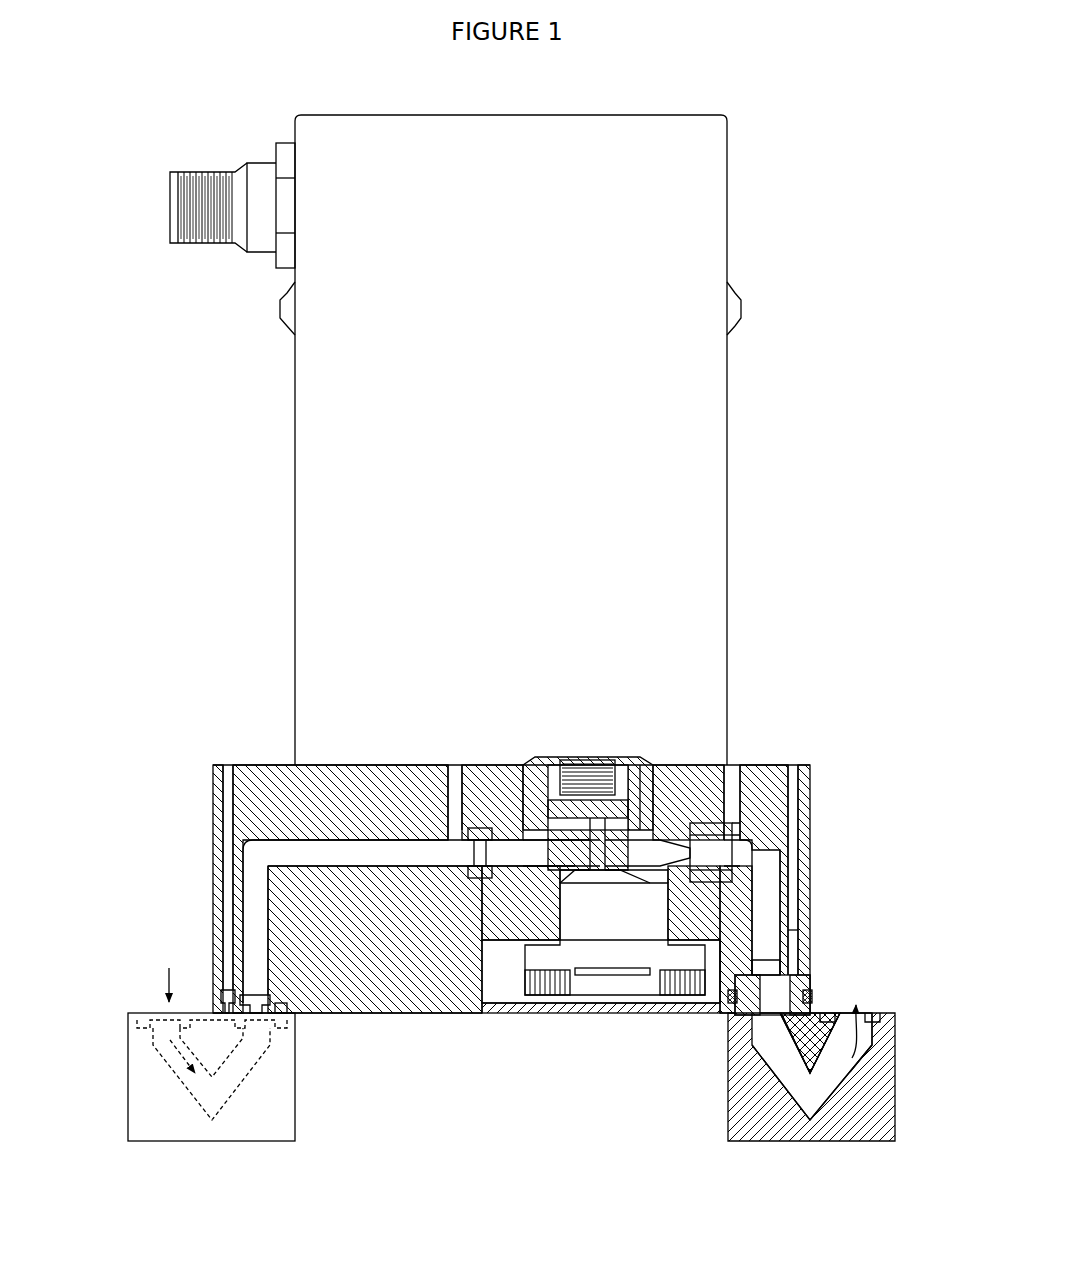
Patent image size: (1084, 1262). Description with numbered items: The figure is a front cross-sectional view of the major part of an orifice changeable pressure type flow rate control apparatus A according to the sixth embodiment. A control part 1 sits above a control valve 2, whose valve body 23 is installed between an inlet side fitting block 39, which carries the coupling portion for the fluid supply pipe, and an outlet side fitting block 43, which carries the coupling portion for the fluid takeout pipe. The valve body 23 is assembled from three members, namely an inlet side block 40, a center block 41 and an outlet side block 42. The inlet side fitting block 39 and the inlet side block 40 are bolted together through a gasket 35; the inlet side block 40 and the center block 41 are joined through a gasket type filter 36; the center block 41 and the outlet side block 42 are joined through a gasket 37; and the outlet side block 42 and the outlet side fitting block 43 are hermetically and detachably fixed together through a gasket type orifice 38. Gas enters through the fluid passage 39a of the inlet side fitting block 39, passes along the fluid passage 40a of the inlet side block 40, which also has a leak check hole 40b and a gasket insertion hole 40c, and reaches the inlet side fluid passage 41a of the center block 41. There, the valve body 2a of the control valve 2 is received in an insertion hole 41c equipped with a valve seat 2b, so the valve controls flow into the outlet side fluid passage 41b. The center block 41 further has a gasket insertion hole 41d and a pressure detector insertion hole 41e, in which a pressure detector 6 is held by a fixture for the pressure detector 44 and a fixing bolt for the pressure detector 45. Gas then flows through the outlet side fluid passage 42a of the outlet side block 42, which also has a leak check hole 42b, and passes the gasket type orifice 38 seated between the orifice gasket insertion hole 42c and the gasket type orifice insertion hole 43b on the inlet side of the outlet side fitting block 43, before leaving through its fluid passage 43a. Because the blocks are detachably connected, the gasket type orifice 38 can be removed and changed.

The control part 1 is at (667, 495).
The pressure type flow rate control apparatus A is at (797, 273).
The control valve 2 is at (616, 753).
The valve body of the control valve 2a is at (576, 800).
The valve seat 2b is at (600, 790).
The pressure detector 6 is at (612, 955).
The valve body 23 is at (270, 762).
The gasket 35 is at (284, 1010).
The gasket type filter 36 is at (476, 830).
The gasket 37 is at (742, 822).
The gasket type orifice 38 is at (768, 985).
The inlet side fitting block 39 is at (145, 1060).
The fluid passage 39a is at (200, 1092).
The inlet side block 40 is at (272, 797).
The fluid passage 40a is at (334, 850).
The leak check hole 40b is at (228, 843).
The gasket insertion hole 40c is at (458, 825).
The center block 41 is at (486, 930).
The inlet side fluid passage 41a is at (522, 858).
The outlet side fluid passage 41b is at (662, 965).
The insertion hole 41c is at (628, 805).
The gasket insertion hole 41d is at (722, 826).
The pressure detector insertion hole 41e is at (716, 950).
The outlet side block 42 is at (780, 795).
The outlet side fluid passage 42a is at (766, 862).
The leak check hole 42b is at (793, 815).
The orifice gasket insertion hole 42c is at (793, 930).
The outlet side fitting block 43 is at (880, 1058).
The fluid passage 43a is at (830, 1075).
The gasket type orifice insertion hole 43b is at (840, 1030).
The fixture for a pressure detector 44 is at (633, 925).
The fixing bolt for the pressure detector 45 is at (548, 985).